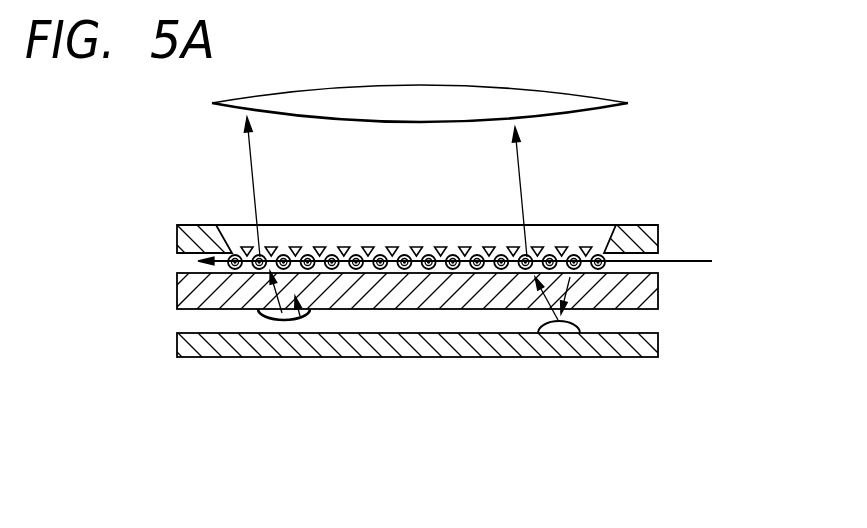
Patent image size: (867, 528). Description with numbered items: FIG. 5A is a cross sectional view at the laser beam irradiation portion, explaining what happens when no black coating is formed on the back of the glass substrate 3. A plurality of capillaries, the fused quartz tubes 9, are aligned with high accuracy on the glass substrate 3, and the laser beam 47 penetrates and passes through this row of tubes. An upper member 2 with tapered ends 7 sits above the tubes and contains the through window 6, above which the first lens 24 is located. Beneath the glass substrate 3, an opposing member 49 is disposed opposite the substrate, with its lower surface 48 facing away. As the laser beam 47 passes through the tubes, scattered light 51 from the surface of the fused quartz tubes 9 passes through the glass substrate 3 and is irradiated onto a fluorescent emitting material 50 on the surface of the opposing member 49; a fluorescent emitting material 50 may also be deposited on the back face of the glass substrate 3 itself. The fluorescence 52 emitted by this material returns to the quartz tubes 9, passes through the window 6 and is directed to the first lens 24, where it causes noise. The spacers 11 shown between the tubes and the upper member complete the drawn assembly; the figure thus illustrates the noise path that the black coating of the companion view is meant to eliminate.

The upper holding plate 2 is at (645, 235).
The glass substrate 3 is at (657, 293).
The window 6 is at (606, 250).
The nozzle 7 is at (562, 247).
The fused quartz tubes 9 is at (334, 247).
The beads 11 is at (650, 268).
The first lens 24 is at (606, 103).
The laser beam 47 is at (697, 259).
The lower surface of substrate 48 is at (640, 309).
The opposing member 49 is at (630, 356).
The fluorescent emitting material 50 is at (278, 320).
The scattered light 51 is at (300, 274).
The fluorescence 52 is at (253, 176).